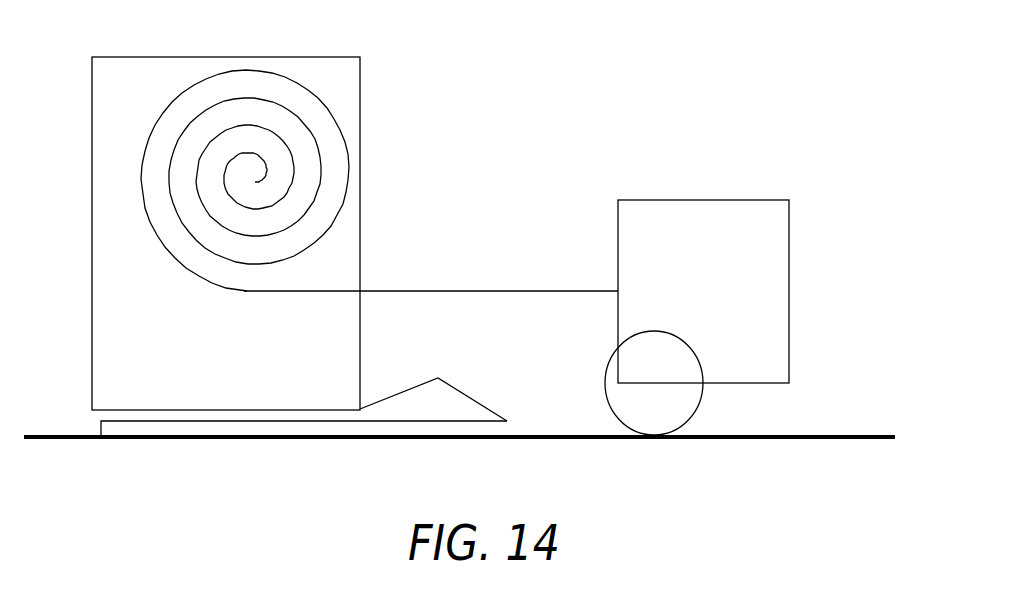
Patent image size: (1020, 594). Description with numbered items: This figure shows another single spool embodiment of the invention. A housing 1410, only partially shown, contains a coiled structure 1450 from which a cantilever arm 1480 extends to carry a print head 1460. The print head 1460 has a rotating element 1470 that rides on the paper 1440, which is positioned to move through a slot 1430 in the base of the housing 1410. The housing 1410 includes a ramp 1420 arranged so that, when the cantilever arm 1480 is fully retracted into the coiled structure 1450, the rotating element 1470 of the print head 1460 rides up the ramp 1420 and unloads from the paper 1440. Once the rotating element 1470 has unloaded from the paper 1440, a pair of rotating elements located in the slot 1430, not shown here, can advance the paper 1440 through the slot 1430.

The housing 1410 is at (105, 309).
The ramp 1420 is at (478, 400).
The slot 1430 is at (130, 428).
The paper 1440 is at (787, 437).
The coiled structure 1450 is at (255, 70).
The print head 1460 is at (713, 200).
The rotating element 1470 is at (607, 365).
The cantilever arm 1480 is at (447, 290).